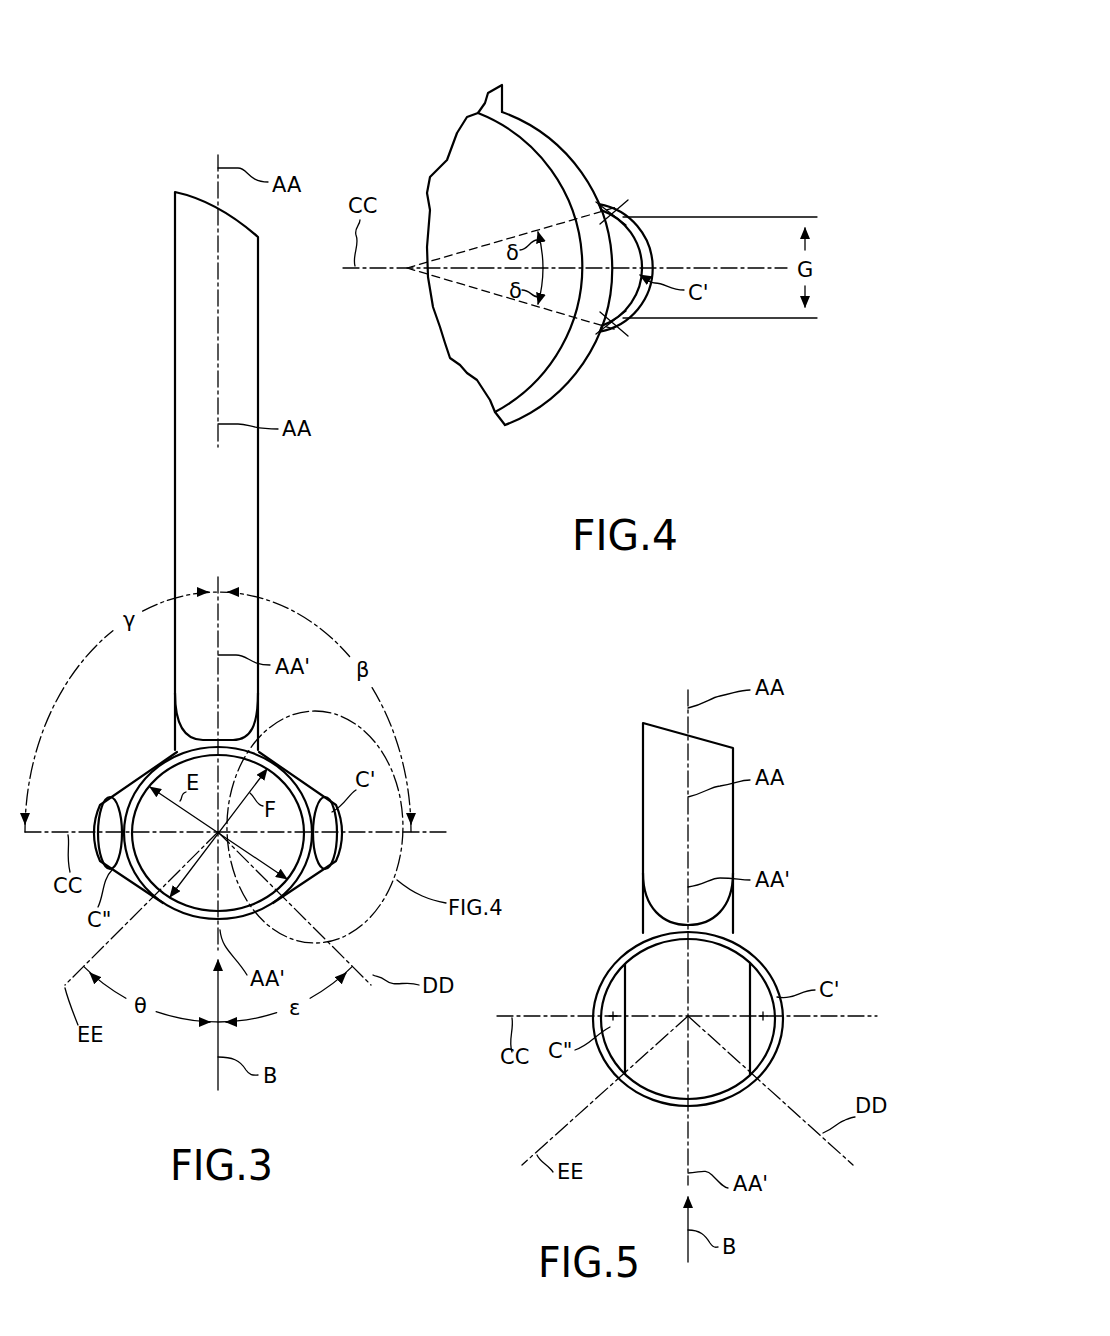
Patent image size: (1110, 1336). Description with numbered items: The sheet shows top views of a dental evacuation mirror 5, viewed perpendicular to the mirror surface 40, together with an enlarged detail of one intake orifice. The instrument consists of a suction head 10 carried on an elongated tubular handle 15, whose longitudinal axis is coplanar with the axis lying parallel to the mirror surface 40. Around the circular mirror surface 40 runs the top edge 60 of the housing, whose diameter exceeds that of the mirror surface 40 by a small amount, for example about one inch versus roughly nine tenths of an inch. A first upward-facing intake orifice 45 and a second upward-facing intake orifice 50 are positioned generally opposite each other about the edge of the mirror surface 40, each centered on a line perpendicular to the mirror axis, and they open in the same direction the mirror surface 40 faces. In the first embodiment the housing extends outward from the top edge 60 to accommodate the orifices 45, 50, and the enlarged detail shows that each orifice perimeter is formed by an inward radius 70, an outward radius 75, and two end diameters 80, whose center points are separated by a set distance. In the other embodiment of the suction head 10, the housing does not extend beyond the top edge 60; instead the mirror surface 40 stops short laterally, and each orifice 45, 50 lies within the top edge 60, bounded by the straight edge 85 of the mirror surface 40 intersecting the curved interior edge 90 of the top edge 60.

In FIG. 5, the dental evacuation mirror 5 is at (652, 690).
In FIG. 3, the suction head 10 is at (131, 720).
In FIG. 4, the suction head 10 is at (643, 84).
In FIG. 3, the elongated tubular handle 15 is at (259, 485).
In FIG. 5, the elongated tubular handle 15 is at (733, 817).
In FIG. 3, the mirror surface 40 is at (197, 887).
In FIG. 4, the mirror surface 40 is at (473, 360).
In FIG. 5, the mirror surface 40 is at (710, 1077).
In FIG. 3, the first upward-facing intake orifice 45 is at (337, 853).
In FIG. 4, the first upward-facing intake orifice 45 is at (633, 302).
In FIG. 5, the first upward-facing intake orifice 45 is at (762, 983).
In FIG. 3, the second upward-facing intake orifice 50 is at (110, 813).
In FIG. 5, the second upward-facing intake orifice 50 is at (615, 987).
In FIG. 3, the top edge 60 is at (138, 788).
In FIG. 4, the top edge 60 is at (543, 150).
In FIG. 5, the top edge 60 is at (747, 947).
In FIG. 4, the inward radius 70 is at (624, 247).
In FIG. 4, the outward radius 75 is at (655, 262).
In FIG. 4, the end diameters 80 is at (620, 196).
In FIG. 5, the straight edge 85 is at (626, 1046).
In FIG. 5, the curved interior edge 90 is at (620, 1001).